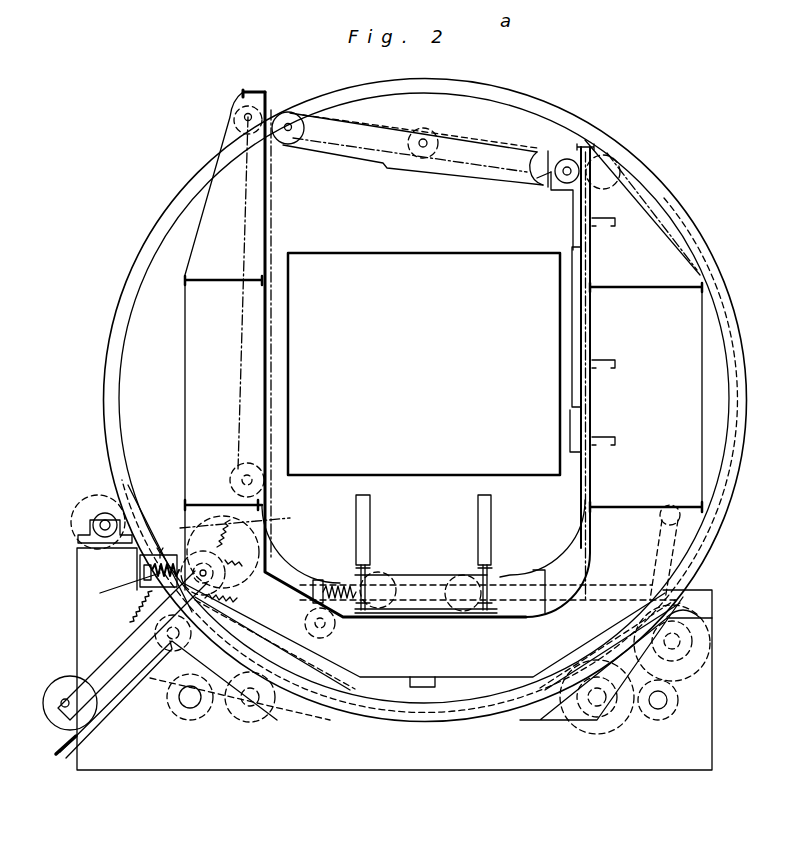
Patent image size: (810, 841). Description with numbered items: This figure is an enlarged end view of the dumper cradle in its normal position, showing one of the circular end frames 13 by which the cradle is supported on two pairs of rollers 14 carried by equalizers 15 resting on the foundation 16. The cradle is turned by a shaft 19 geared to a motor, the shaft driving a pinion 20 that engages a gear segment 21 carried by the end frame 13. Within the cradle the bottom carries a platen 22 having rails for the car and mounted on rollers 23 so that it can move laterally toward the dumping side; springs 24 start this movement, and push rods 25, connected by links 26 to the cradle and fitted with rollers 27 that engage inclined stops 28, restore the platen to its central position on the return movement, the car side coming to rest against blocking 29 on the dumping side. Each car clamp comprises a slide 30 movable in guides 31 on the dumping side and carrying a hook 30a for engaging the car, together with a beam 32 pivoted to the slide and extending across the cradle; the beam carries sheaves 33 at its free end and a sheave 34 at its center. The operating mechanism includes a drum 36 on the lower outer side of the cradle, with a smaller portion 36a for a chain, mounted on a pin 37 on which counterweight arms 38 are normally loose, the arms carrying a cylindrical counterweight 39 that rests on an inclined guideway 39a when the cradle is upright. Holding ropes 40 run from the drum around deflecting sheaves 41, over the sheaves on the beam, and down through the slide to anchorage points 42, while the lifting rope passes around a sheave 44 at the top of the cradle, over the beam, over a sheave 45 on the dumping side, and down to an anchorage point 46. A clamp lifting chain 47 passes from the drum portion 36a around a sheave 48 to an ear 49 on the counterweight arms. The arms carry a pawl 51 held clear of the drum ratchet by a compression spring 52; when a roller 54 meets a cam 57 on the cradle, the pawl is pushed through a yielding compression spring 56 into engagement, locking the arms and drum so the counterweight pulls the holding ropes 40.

The circular end frame 13 is at (423, 400).
The rollers 14 is at (264, 726).
The equalizers 15 is at (204, 716).
The foundation 16 is at (394, 659).
The shaft 19 is at (91, 521).
The pinion 20 is at (97, 497).
The gear segment 21 is at (712, 520).
The platen 22 is at (426, 554).
The rollers 23 is at (453, 606).
The springs 24 is at (330, 580).
The push rods 25 is at (578, 603).
The links 26 is at (655, 553).
The rollers 27 is at (616, 658).
The inclined stops 28 is at (663, 610).
The blocking 29 is at (569, 434).
The slide 30 is at (578, 205).
The hook 30a is at (558, 196).
The guides 31 is at (582, 318).
The beam 32 is at (413, 149).
The sheaves 33 is at (288, 111).
The sheave 34 is at (430, 131).
The drum 36 is at (177, 547).
The smaller drum portion 36a is at (235, 566).
The pin 37 is at (211, 579).
The counterweight arms 38 is at (131, 642).
The car clamp counterweight 39 is at (52, 744).
The inclined guideway 39a is at (102, 726).
The holding ropes 40 is at (276, 243).
The deflecting sheaves 41 is at (263, 490).
The anchorage points 42 is at (582, 505).
The sheave 44 is at (232, 121).
The sheave 45 is at (609, 168).
The anchorage point 46 is at (700, 283).
The clamp lifting chain 47 is at (304, 650).
The sheave 48 is at (242, 356).
The ear 49 is at (96, 679).
The pawl 51 is at (412, 660).
The compression spring 52 is at (134, 605).
The roller 54 is at (262, 532).
The compression spring 56 is at (123, 591).
The cam 57 is at (141, 568).